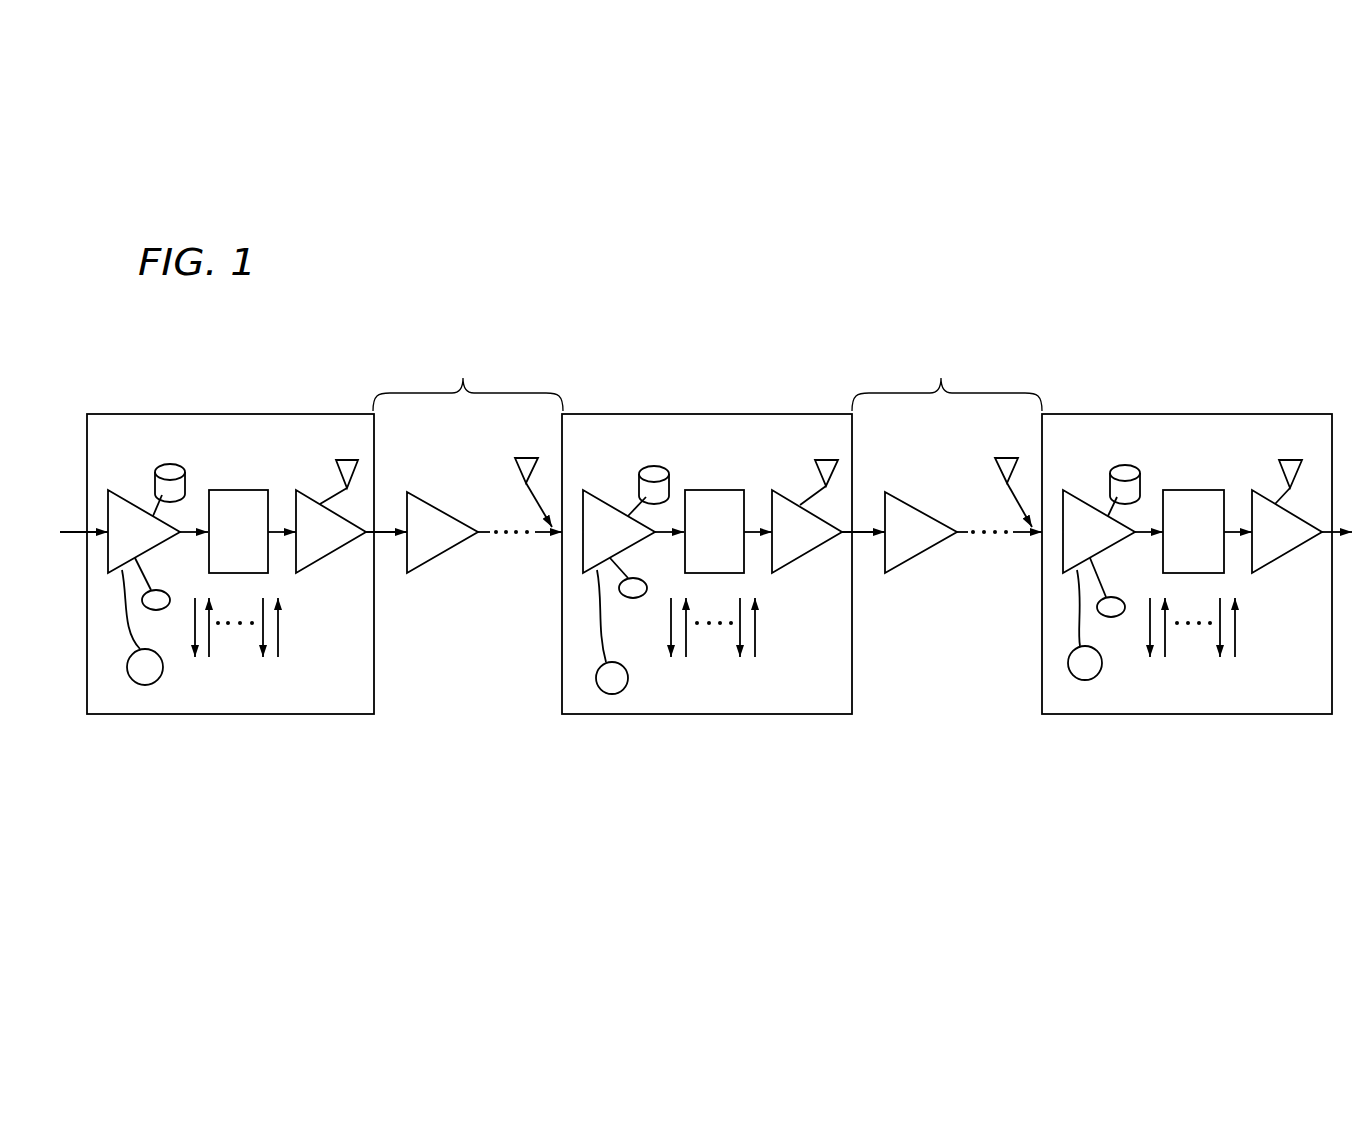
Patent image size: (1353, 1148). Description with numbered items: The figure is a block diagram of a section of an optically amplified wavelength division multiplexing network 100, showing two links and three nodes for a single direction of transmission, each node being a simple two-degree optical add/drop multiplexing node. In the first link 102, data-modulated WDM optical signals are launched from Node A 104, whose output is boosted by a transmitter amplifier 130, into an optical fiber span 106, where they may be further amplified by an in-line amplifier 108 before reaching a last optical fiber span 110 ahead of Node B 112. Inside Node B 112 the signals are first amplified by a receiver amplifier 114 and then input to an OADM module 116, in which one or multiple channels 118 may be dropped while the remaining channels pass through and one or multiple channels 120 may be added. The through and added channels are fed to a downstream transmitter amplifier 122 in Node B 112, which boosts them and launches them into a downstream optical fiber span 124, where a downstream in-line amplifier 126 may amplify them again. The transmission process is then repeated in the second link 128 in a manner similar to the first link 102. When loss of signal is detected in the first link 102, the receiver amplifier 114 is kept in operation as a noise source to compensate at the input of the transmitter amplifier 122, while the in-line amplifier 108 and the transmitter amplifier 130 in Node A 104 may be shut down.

The optically amplified wavelength division multiplexing network 100 is at (296, 344).
The Link 1 102 is at (520, 390).
The Node A 104 is at (232, 413).
The optical fiber span 106 is at (385, 536).
The in-line amplifier 108 is at (415, 489).
The last optical fiber span 110 is at (541, 536).
The Node B 112 is at (710, 412).
The receiver amplifier 114 is at (597, 489).
The OADM module 116 is at (712, 489).
The dropped channels 118 is at (667, 623).
The added channels 120 is at (760, 626).
The transmitter amplifier 122 is at (787, 489).
The downstream optical fiber span 124 is at (863, 536).
The downstream in-line amplifier 126 is at (896, 489).
The Link 2 128 is at (1002, 390).
The transmitter amplifier 130 is at (310, 499).